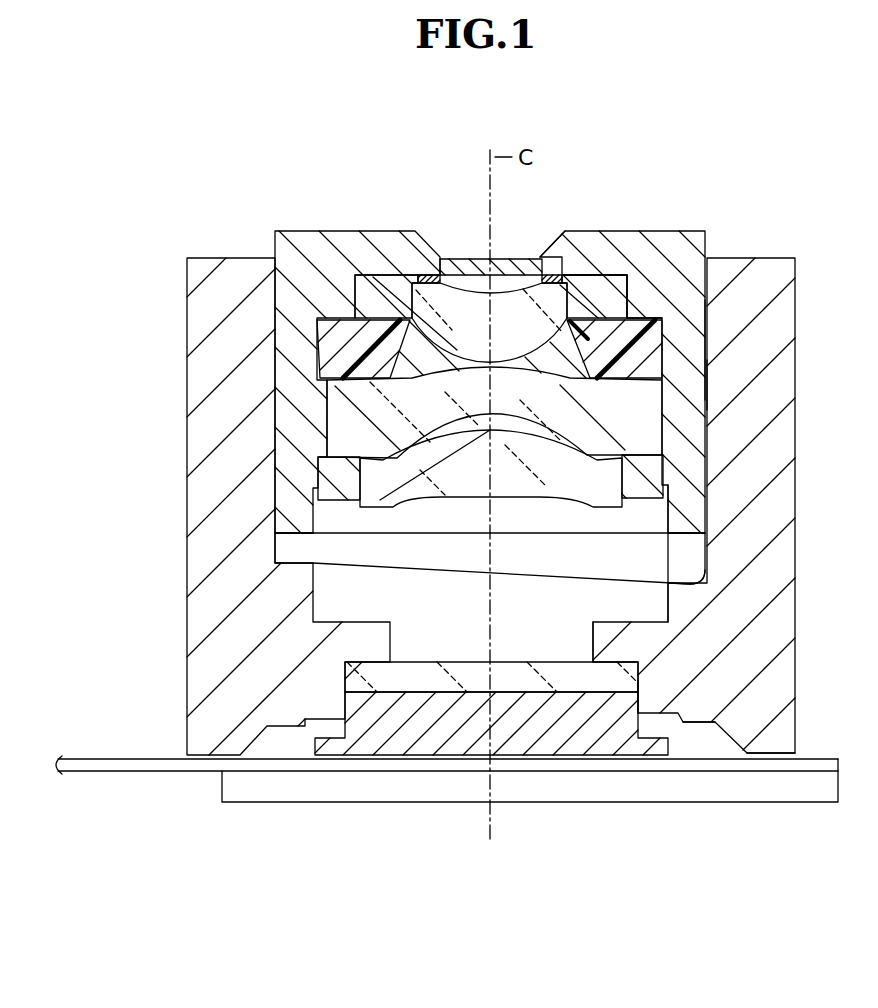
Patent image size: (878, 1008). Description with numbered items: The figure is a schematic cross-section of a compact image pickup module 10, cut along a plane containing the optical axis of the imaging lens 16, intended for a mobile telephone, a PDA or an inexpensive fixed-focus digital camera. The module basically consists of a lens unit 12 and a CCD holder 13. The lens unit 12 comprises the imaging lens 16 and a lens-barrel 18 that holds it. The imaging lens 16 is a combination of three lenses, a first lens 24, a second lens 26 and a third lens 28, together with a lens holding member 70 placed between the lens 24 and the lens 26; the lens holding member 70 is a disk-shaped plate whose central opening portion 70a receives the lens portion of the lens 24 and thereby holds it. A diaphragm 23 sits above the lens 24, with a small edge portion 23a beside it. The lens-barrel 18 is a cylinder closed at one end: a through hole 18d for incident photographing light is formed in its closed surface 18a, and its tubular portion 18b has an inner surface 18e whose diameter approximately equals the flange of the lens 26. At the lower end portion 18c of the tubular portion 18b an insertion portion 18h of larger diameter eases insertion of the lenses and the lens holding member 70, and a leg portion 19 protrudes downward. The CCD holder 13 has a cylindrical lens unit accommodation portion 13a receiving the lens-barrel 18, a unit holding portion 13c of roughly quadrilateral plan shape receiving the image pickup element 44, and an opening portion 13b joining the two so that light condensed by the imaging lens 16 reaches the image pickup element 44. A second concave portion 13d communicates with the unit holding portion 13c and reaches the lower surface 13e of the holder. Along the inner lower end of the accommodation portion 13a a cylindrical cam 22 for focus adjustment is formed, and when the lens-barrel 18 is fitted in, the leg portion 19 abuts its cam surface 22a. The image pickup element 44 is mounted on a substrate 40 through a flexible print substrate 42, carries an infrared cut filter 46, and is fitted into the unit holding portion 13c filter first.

The compact image pickup module 10 is at (749, 140).
The lens unit 12 is at (388, 166).
The CCD holder 13 is at (790, 249).
The lens unit accommodation portion 13a is at (706, 388).
The opening portion 13b is at (592, 630).
The unit holding portion 13c is at (640, 705).
The second concave portion 13d is at (716, 723).
The lower surface 13e is at (788, 753).
The imaging lens 16 is at (355, 320).
The lens-barrel 18 is at (640, 186).
The closed surface 18a is at (654, 313).
The tubular portion 18b is at (698, 352).
The end portion 18c is at (700, 532).
The through hole 18d is at (543, 257).
The inner surface 18e is at (661, 318).
The insertion portion 18h is at (318, 531).
The leg portion 19 is at (683, 580).
The cylindrical cam 22 is at (519, 572).
The cam surface 22a is at (691, 581).
The diaphragm 23 is at (425, 256).
The cap edge 23a is at (422, 276).
The lens 24 is at (385, 274).
The lens 26 is at (340, 405).
The lens 28 is at (370, 485).
The substrate 40 is at (248, 786).
The flexible print substrate 42 is at (135, 770).
The image pickup element 44 is at (404, 748).
The infrared cut filter 46 is at (368, 680).
The lens holding member 70 is at (321, 333).
The opening portion 70a is at (362, 358).